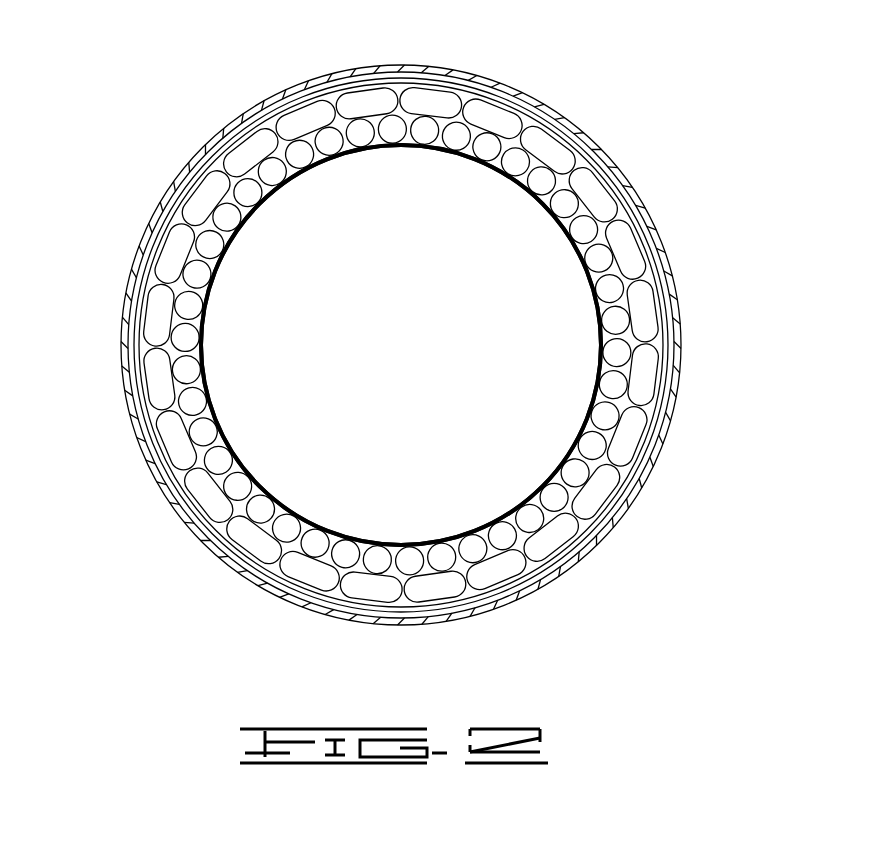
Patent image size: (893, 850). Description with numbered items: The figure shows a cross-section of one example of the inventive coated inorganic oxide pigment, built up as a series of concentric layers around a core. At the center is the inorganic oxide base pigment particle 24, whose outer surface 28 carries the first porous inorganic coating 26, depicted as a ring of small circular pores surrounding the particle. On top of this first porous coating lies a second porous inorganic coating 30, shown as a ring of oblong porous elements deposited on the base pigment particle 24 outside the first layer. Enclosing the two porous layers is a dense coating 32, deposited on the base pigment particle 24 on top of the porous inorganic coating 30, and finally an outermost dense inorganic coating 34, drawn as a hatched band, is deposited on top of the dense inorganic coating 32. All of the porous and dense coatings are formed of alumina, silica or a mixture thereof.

The inorganic oxide base pigment particle 24 is at (420, 340).
The porous inorganic coating 26 is at (488, 140).
The outer surface 28 is at (557, 244).
The second porous inorganic coating 30 is at (432, 103).
The dense coating 32 is at (597, 157).
The dense inorganic coating 34 is at (558, 113).